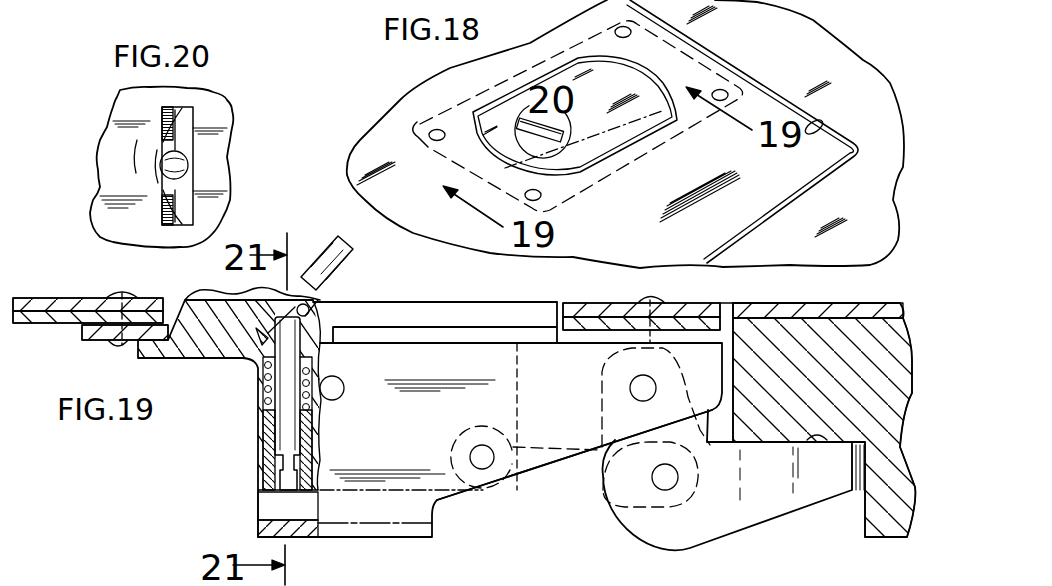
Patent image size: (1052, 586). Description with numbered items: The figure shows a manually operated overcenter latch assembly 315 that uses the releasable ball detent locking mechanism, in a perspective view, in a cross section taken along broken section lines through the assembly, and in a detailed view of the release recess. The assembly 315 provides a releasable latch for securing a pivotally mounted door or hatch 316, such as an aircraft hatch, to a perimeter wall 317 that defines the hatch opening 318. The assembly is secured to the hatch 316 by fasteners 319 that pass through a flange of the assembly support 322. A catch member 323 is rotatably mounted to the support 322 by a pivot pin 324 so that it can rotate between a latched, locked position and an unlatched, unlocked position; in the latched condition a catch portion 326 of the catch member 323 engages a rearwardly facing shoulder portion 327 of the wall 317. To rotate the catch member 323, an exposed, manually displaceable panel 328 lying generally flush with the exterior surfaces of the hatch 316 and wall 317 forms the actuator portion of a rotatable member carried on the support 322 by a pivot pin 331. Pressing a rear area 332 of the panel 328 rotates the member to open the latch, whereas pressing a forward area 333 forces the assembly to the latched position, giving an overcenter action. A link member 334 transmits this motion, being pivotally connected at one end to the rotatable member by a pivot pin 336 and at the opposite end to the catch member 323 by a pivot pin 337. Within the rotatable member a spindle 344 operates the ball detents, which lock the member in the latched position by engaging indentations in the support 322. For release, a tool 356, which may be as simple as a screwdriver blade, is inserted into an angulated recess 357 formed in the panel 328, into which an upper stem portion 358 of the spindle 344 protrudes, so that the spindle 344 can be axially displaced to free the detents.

In FIG. 18, the overcenter latch assembly 315 is at (644, 146).
In FIG. 18, the hatch 316 is at (780, 230).
In FIG. 19, the hatch 316 is at (140, 298).
In FIG. 18, the perimeter wall 317 is at (797, 60).
In FIG. 19, the perimeter wall 317 is at (760, 302).
In FIG. 18, the hatch opening 318 is at (808, 124).
In FIG. 19, the hatch opening 318 is at (727, 302).
In FIG. 19, the fasteners 319 is at (112, 345).
In FIG. 19, the assembly support 322 is at (376, 520).
In FIG. 19, the catch member 323 is at (757, 517).
In FIG. 19, the pivot pin 324 is at (637, 390).
In FIG. 19, the catch portion 326 is at (815, 440).
In FIG. 19, the shoulder portion 327 is at (777, 442).
In FIG. 18, the panel 328 is at (690, 50).
In FIG. 20, the panel 328 is at (110, 147).
In FIG. 19, the panel 328 is at (432, 300).
In FIG. 19, the pivot pin 331 is at (340, 397).
In FIG. 19, the rear area 332 is at (252, 285).
In FIG. 19, the forward area 333 is at (516, 302).
In FIG. 19, the link member 334 is at (550, 487).
In FIG. 19, the pivot pin 336 is at (480, 455).
In FIG. 19, the pivot pin 337 is at (660, 480).
In FIG. 19, the spindle 344 is at (285, 395).
In FIG. 19, the tool 356 is at (350, 264).
In FIG. 20, the angulated recess 357 is at (180, 117).
In FIG. 19, the angulated recess 357 is at (258, 361).
In FIG. 20, the upper stem portion 358 is at (182, 163).
In FIG. 19, the upper stem portion 358 is at (308, 315).